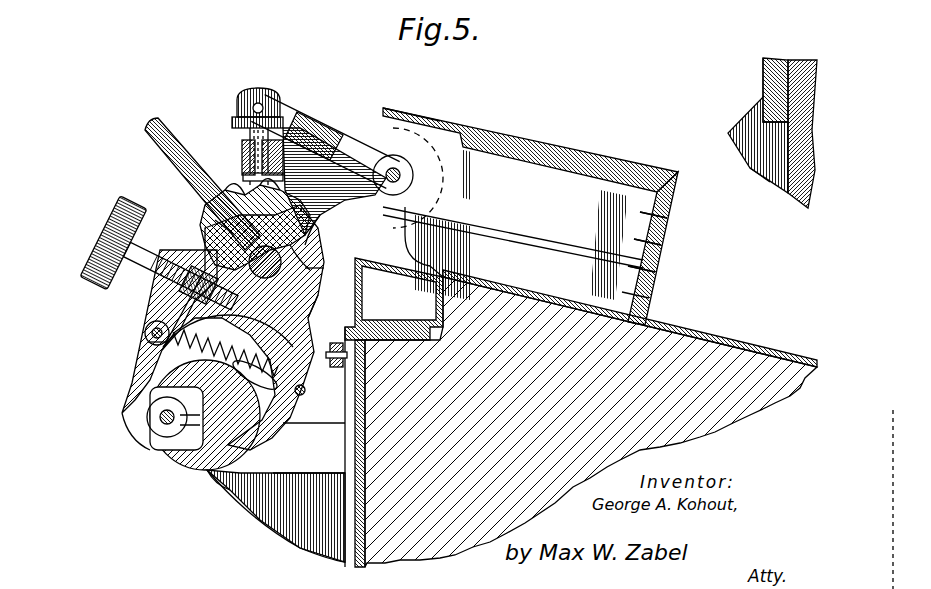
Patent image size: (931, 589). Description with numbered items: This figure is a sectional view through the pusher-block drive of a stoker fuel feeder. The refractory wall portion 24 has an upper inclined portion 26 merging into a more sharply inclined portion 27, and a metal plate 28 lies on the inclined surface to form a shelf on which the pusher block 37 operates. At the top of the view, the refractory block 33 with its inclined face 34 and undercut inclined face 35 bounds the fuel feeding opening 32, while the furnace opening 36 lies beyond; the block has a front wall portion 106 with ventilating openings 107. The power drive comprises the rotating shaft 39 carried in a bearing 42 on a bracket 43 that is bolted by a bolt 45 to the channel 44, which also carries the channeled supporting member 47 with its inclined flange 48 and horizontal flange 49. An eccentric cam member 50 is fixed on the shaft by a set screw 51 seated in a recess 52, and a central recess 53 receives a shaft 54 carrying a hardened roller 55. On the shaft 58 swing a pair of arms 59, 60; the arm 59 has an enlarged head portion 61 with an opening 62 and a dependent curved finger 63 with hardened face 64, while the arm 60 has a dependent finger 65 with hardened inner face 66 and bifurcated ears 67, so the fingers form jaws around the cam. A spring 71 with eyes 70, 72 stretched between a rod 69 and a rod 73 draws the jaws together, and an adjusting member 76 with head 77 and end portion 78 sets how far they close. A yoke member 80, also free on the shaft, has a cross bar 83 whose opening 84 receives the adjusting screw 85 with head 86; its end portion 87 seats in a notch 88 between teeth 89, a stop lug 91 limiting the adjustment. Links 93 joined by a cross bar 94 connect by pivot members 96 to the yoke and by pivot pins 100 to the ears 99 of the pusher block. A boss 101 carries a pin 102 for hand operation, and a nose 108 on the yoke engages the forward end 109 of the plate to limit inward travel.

The wall portion 24 is at (683, 420).
The upper inclined portion 26 is at (548, 315).
The sharply inclined portion 27 is at (800, 60).
The metal plate 28 is at (690, 333).
The fuel feeding opening 32 is at (683, 128).
The block of refractory material 33 is at (765, 178).
The inclined face 34 is at (745, 108).
The undercut inclined face 35 is at (755, 160).
The opening 36 is at (780, 280).
The pusher block 37 is at (580, 137).
The rotating shaft 39 is at (215, 488).
The bearing 42 is at (314, 434).
The bracket 43 is at (245, 515).
The channel 44 is at (345, 505).
The bolt 45 is at (266, 375).
The channeled supporting member 47 is at (394, 299).
The inclined flange 48 is at (395, 291).
The horizontal flange 49 is at (393, 306).
The eccentric or cam member 50 is at (195, 468).
The set screw 51 is at (248, 343).
The recess 52 is at (258, 358).
The central recess or opening 53 is at (165, 455).
The shaft 54 is at (160, 419).
The roller 55 is at (158, 430).
The shaft 58 is at (322, 232).
The arm 59 is at (310, 297).
The arm 60 is at (146, 333).
The enlarged head portion 61 is at (315, 250).
The opening 62 is at (322, 268).
The dependent curved finger 63 is at (336, 343).
The face 64 is at (285, 452).
The dependent finger 65 is at (140, 370).
The hardened inner face 66 is at (140, 392).
The ears 67 is at (212, 265).
The steel rod 69 is at (148, 344).
The eye 70 is at (137, 331).
The spring 71 is at (228, 331).
The eye or loop 72 is at (305, 390).
The rod 73 is at (305, 403).
The screw-threaded adjusting member 76 is at (140, 270).
The enlarged head 77 is at (125, 205).
The end portion 78 is at (225, 351).
The yoke member 80 is at (320, 132).
The cross bar 83 is at (240, 120).
The opening 84 is at (334, 181).
The screw-threaded adjusting member 85 is at (270, 140).
The head 86 is at (284, 117).
The end portion 87 is at (240, 152).
The groove or notch 88 is at (215, 165).
The rib or tooth 89 is at (210, 190).
The stop lug 91 is at (251, 260).
The link 93 is at (392, 108).
The cross bar 94 is at (340, 140).
The pivot member 96 is at (259, 102).
The ear 99 is at (400, 130).
The pivot pin 100 is at (414, 173).
The enlargement or boss 101 is at (215, 222).
The rod or pin 102 is at (158, 122).
The front wall portion 106 is at (665, 262).
The ventilating opening 107 is at (668, 232).
The forward projection or nose 108 is at (322, 208).
The forward end 109 is at (405, 220).